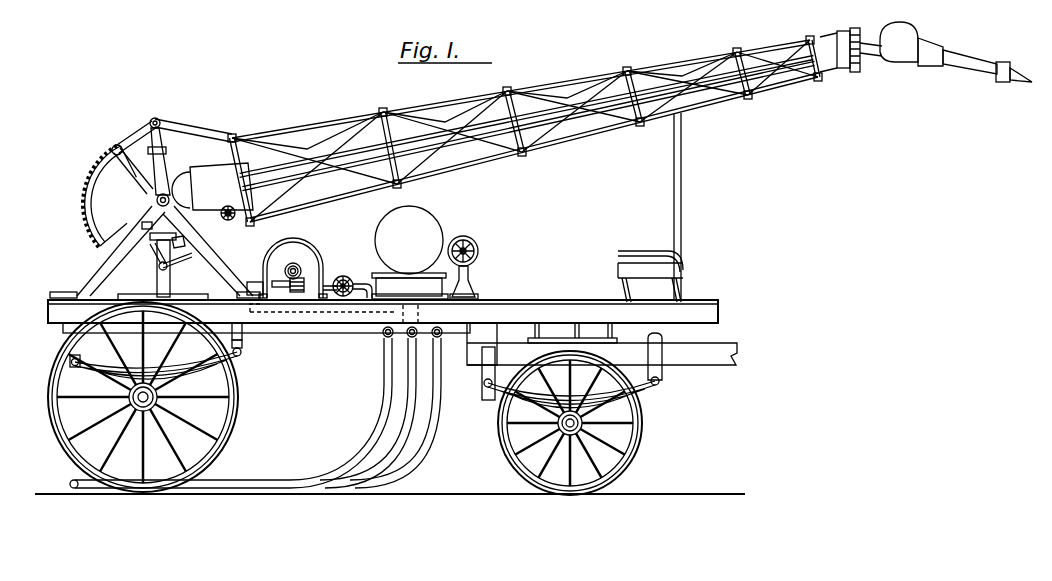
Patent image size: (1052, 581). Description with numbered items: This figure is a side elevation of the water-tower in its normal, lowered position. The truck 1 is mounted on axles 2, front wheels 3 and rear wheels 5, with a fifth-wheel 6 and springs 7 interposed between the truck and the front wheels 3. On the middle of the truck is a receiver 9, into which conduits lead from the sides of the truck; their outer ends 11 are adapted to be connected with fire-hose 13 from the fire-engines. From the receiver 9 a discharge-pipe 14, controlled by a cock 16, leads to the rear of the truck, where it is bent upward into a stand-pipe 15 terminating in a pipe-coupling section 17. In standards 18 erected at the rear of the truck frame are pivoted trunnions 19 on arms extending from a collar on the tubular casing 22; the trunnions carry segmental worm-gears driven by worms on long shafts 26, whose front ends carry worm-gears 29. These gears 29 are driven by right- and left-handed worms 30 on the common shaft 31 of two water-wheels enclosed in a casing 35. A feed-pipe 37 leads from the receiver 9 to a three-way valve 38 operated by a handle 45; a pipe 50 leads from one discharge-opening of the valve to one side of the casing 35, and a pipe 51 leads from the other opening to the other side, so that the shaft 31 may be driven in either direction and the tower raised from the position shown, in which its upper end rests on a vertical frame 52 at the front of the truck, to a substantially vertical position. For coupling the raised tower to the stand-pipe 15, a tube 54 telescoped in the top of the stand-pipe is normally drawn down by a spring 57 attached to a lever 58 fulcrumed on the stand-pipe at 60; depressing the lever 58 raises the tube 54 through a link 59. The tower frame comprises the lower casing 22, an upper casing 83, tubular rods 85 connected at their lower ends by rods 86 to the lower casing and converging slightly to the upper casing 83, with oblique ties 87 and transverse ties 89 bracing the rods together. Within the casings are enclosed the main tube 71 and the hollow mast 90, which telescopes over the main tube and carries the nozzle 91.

The truck 1 is at (536, 300).
The axles 2 is at (162, 396).
The front wheels 3 is at (641, 394).
The rear wheels 5 is at (238, 410).
The fifth-wheel 6 is at (616, 340).
The springs 7 is at (657, 385).
The receiver 9 is at (431, 226).
The outer ends of conduits 11 is at (383, 337).
The fire-hose 13 is at (384, 412).
The discharge-pipe 14 is at (282, 333).
The stand-pipe 15 is at (180, 260).
The cock 16 is at (480, 248).
The pipe-coupling section 17 is at (157, 245).
The standards 18 is at (224, 262).
The trunnions 19 is at (140, 204).
The tubular casing 22 is at (207, 176).
The shafts 26 is at (278, 283).
The worm-gears 29 is at (305, 286).
The worms 30 is at (290, 264).
The common shaft 31 is at (298, 267).
The casing 35 is at (300, 242).
The feed-pipe 37 is at (398, 311).
The three-way valve 38 is at (344, 276).
The handle 45 is at (366, 283).
The pipe 50 is at (330, 285).
The pipe 51 is at (255, 282).
The vertical frame 52 is at (683, 160).
The tube 54 is at (142, 225).
The spring 57 is at (223, 218).
The lever 58 is at (186, 243).
The link 59 is at (163, 253).
The fulcrum 60 is at (158, 266).
The main tube 71 is at (376, 134).
The upper casing 83 is at (796, 80).
The tubular rods 85 is at (338, 120).
The rods 86 is at (246, 146).
The oblique ties 87 is at (470, 106).
The transverse ties 89 is at (389, 130).
The hollow mast 90 is at (870, 42).
The nozzle 91 is at (975, 68).